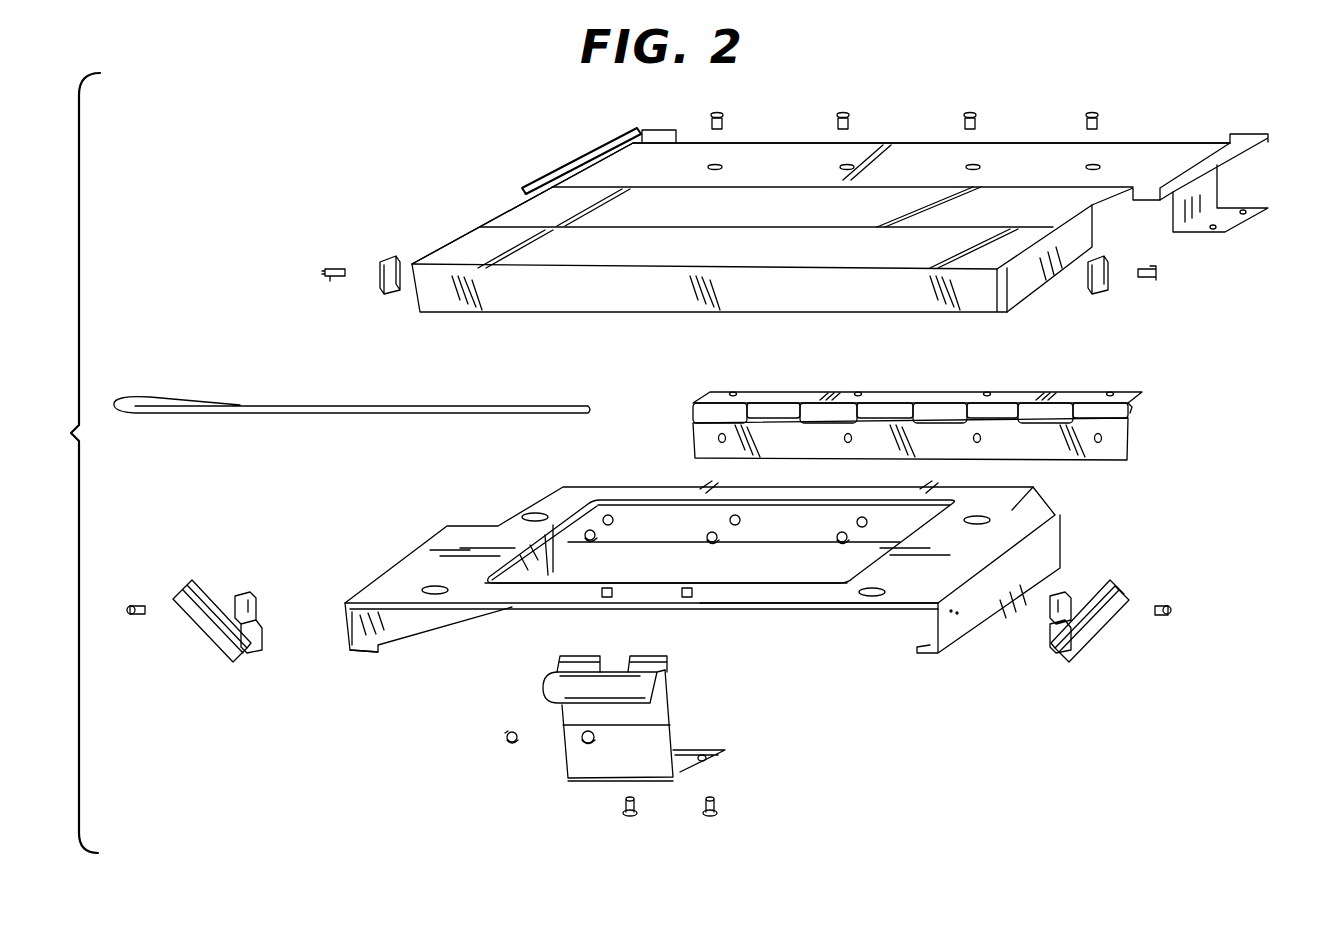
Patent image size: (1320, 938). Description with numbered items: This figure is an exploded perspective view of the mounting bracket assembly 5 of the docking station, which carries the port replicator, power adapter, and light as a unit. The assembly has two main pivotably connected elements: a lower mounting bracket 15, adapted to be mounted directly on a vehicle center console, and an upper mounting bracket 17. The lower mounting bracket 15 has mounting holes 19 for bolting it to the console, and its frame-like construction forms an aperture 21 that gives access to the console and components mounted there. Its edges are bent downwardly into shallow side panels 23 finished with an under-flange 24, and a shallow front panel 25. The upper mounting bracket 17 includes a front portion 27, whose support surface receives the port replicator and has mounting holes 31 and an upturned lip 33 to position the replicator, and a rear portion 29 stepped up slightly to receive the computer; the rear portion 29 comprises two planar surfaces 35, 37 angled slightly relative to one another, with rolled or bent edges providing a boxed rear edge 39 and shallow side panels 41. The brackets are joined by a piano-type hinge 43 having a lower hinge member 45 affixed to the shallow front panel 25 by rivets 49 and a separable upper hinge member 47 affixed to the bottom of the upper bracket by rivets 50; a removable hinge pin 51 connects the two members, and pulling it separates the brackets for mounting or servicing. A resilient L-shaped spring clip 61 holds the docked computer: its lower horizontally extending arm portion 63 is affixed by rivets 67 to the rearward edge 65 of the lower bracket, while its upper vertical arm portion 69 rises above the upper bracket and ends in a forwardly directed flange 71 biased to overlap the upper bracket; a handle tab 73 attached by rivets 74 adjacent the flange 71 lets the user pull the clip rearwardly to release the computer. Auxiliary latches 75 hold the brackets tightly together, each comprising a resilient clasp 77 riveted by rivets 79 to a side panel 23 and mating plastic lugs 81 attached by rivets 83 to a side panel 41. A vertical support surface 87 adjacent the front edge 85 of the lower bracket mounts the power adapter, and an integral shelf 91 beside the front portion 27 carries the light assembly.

The mounting bracket assembly 5 is at (75, 463).
The lower mounting bracket 15 is at (392, 527).
The upper mounting bracket 17 is at (497, 188).
The mounting holes 19 is at (513, 523).
The aperture 21 is at (750, 584).
The shallow side panels 23 is at (343, 640).
The under-flange 24 is at (400, 630).
The shallow front panel 25 is at (660, 528).
The front portion 27 is at (1023, 152).
The rear portion 29 is at (477, 218).
The mounting holes 31 is at (973, 168).
The upturned lip 33 is at (590, 148).
The planar surface 35 is at (826, 216).
The planar surface 37 is at (799, 260).
The boxed rear edge 39 is at (729, 293).
The shallow side panels 41 is at (1045, 272).
The piano-type hinge 43 is at (954, 412).
The lower hinge member 45 is at (1130, 448).
The upper hinge member 47 is at (1090, 392).
The rivets 49 is at (600, 540).
The rivets 50 is at (1098, 120).
The removable hinge pin 51 is at (168, 395).
The spring clip 61 is at (639, 742).
The lower horizontally extending arm portion 63 is at (693, 772).
The rearward edge 65 is at (792, 612).
The rivets 67 is at (702, 805).
The upper vertical arm portion 69 is at (670, 707).
The flange 71 is at (578, 655).
The handle tab 73 is at (557, 690).
The rivets 74 is at (525, 795).
The auxiliary latch 75 is at (192, 630).
The resilient clasp 77 is at (215, 612).
The rivets 79 is at (130, 606).
The plastic lugs 81 is at (380, 283).
The rivets 83 is at (322, 272).
The front edge 85 is at (668, 492).
The vertical support surface 87 is at (553, 572).
The integral shelf 91 is at (1230, 212).